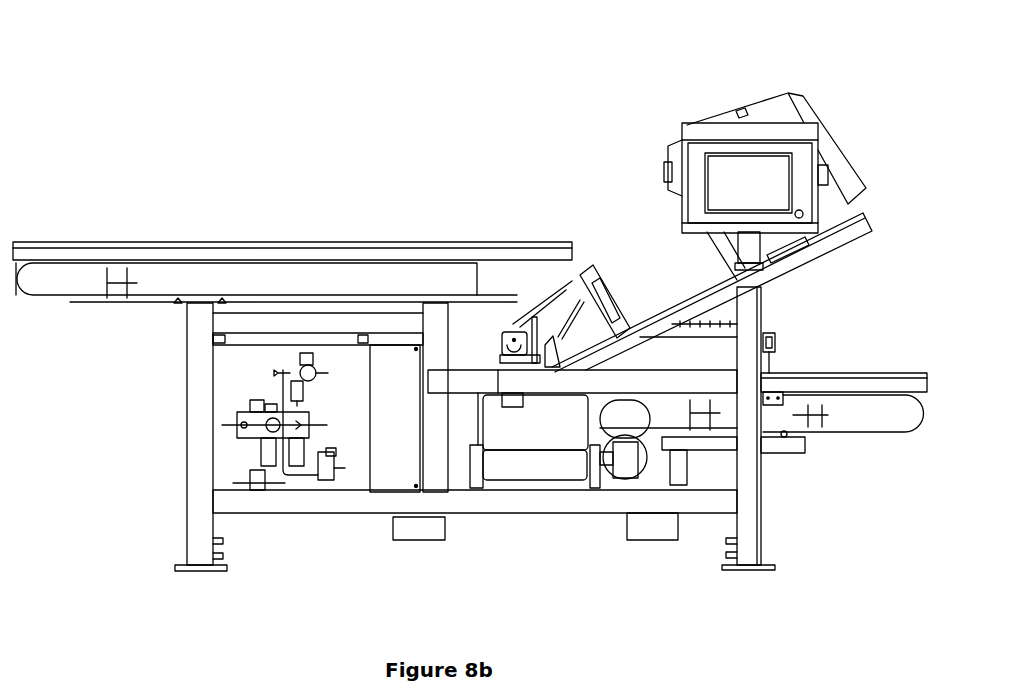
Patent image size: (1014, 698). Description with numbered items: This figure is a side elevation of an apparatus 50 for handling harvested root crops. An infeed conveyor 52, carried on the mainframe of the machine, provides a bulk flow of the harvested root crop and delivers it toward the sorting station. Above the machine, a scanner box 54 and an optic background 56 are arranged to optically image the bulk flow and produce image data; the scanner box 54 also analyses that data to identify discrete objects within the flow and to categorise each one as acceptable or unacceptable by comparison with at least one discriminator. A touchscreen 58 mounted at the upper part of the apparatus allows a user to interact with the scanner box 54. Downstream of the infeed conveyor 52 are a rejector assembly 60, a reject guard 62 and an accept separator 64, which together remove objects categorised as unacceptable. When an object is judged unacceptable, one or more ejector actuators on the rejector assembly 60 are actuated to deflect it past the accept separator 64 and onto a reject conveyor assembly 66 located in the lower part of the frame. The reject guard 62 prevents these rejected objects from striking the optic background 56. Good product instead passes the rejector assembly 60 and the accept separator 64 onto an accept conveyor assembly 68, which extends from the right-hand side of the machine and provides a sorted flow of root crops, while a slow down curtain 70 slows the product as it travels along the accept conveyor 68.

The apparatus 50 is at (530, 85).
The infeed conveyor 52 is at (103, 252).
The scanner box 54 is at (805, 99).
The optic background 56 is at (535, 318).
The touchscreen 58 is at (798, 173).
The rejector assembly 60 is at (672, 308).
The reject guard 62 is at (577, 324).
The accept separator 64 is at (630, 313).
The reject conveyor assembly 66 is at (513, 467).
The accept conveyor assembly 68 is at (890, 378).
The slow down curtain 70 is at (768, 363).